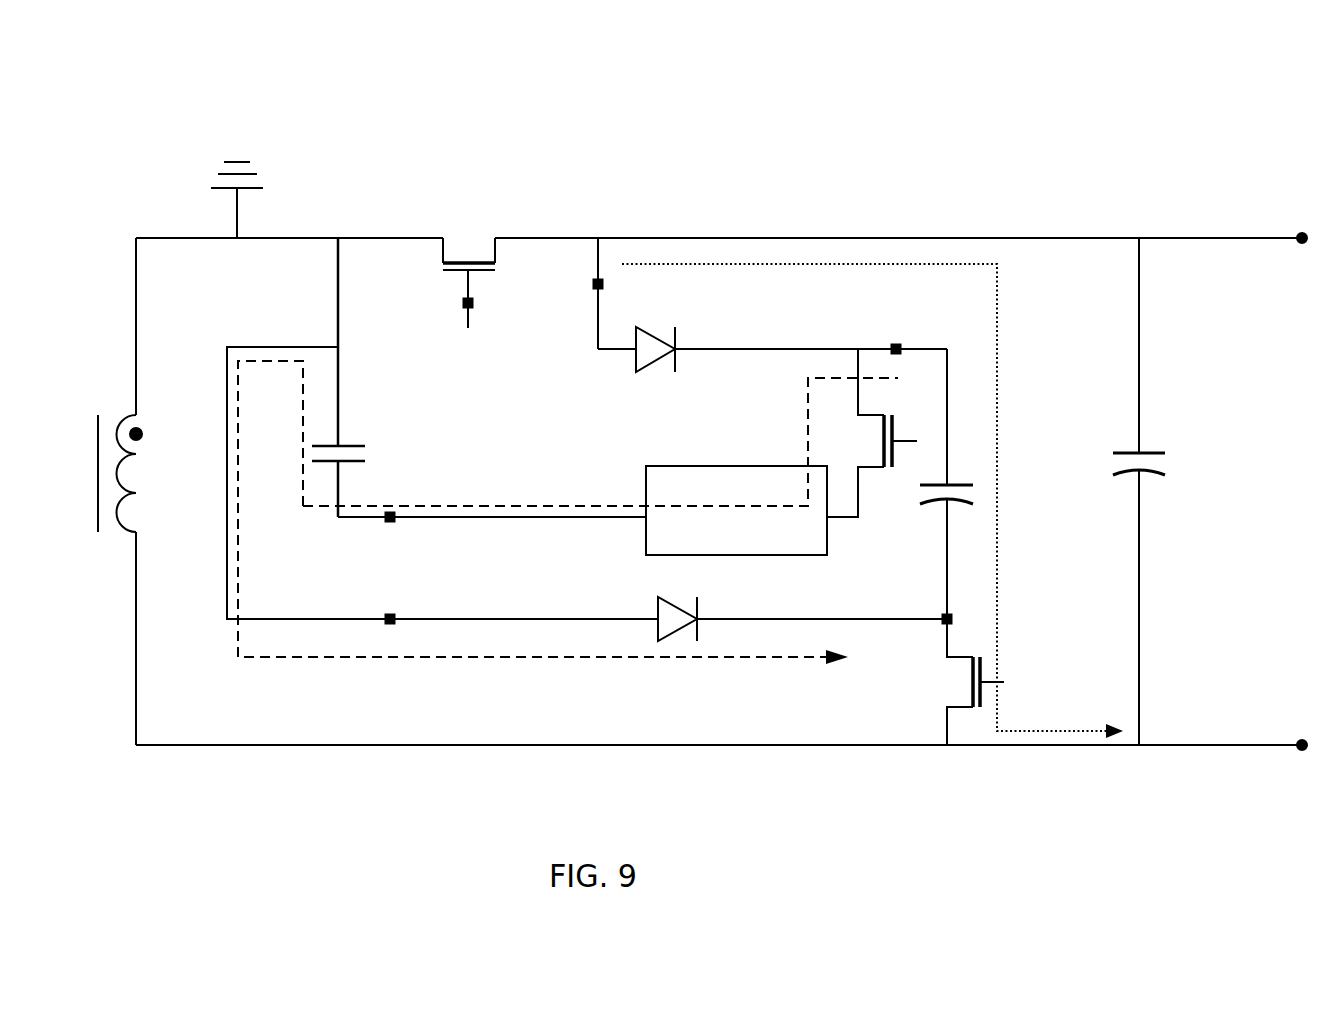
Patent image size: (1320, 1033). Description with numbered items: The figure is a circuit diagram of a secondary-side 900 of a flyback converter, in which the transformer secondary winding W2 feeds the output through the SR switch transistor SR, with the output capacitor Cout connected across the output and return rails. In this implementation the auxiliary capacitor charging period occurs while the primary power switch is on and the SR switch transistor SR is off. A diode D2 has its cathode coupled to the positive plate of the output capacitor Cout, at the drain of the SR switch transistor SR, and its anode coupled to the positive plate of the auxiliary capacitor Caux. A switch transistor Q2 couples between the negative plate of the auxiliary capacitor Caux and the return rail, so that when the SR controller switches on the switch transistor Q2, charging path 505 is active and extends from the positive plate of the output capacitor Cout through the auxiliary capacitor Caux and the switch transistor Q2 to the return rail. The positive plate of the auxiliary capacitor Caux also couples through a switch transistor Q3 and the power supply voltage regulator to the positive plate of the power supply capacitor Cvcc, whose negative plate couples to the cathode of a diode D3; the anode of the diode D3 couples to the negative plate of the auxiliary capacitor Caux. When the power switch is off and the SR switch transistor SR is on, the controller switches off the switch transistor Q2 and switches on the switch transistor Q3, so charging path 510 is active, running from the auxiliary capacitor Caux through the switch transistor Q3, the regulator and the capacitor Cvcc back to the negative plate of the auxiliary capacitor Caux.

The secondary-side 900 is at (326, 88).
The charging path 505 is at (1000, 403).
The charging path 510 is at (428, 657).
The secondary winding W2 is at (145, 473).
The SR switch transistor SR is at (469, 266).
The diode D2 is at (772, 363).
The diode D3 is at (802, 643).
The switch transistor Q3 is at (872, 433).
The switch transistor Q2 is at (958, 682).
The Cvcc capacitor Cvcc is at (374, 377).
The auxiliary capacitor Caux is at (987, 484).
The output capacitor Cout is at (1181, 461).